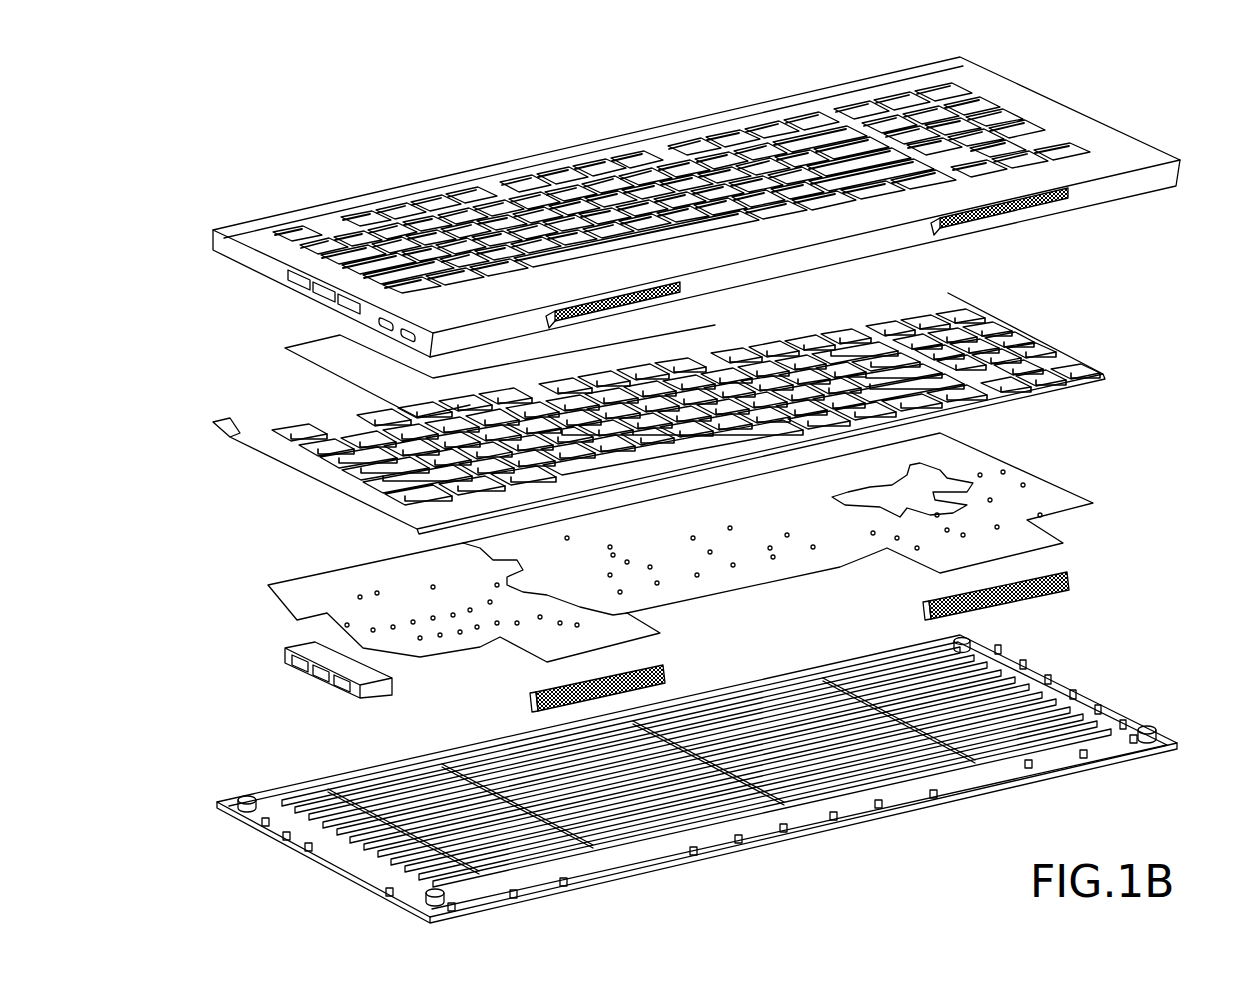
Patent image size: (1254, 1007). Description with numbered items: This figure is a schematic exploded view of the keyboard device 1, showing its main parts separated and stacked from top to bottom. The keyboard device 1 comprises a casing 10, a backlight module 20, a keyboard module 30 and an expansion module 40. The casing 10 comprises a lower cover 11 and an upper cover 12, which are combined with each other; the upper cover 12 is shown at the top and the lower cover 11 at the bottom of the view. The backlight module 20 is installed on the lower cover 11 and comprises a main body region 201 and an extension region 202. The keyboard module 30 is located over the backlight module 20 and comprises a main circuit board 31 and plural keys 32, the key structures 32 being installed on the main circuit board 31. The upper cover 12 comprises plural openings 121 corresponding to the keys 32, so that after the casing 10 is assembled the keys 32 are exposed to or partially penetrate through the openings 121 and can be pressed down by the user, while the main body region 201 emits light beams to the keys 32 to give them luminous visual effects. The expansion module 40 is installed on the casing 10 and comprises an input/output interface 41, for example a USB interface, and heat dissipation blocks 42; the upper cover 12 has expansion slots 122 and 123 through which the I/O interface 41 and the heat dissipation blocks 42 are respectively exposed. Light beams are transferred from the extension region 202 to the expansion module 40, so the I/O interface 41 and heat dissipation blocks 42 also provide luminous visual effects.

The keyboard device 1 is at (347, 103).
The casing 10 is at (1172, 540).
The lower cover 11 is at (877, 817).
The upper cover 12 is at (237, 250).
The openings 121 is at (668, 143).
The expansion slot 122 is at (1018, 213).
The expansion slot 123 is at (290, 282).
The backlight module 20 is at (1010, 482).
The main body region 201 is at (743, 577).
The extension region 202 is at (320, 622).
The keyboard module 30 is at (1093, 383).
The main circuit board 31 is at (330, 357).
The keys 32 is at (1003, 327).
The expansion module 40 is at (1172, 631).
The input/output interface 41 is at (313, 677).
The heat dissipation blocks 42 is at (645, 668).